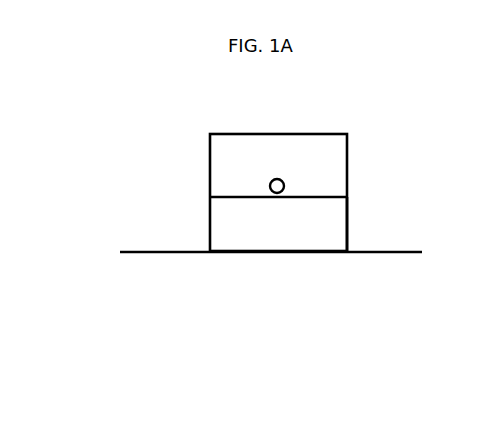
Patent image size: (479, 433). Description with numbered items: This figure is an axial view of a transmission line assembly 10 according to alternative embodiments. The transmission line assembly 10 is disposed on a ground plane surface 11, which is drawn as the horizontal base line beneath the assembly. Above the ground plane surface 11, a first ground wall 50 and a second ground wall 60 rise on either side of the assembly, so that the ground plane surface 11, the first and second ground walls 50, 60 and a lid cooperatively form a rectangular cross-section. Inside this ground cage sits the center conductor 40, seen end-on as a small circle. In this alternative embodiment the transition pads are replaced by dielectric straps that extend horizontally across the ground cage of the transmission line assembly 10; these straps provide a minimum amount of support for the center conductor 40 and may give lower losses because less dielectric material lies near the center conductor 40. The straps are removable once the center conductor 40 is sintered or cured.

The transmission line assembly 10 is at (203, 144).
The ground plane surface 11 is at (179, 252).
The center conductor 40 is at (272, 180).
The first ground wall 50 is at (210, 209).
The second ground wall 60 is at (347, 212).